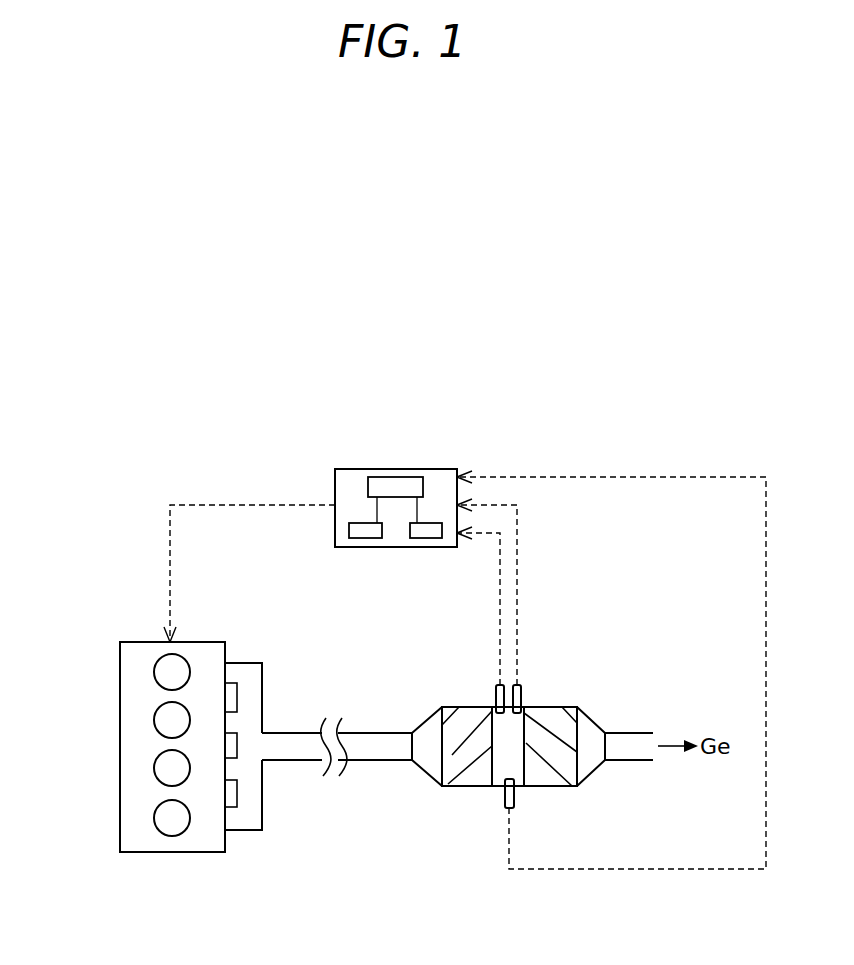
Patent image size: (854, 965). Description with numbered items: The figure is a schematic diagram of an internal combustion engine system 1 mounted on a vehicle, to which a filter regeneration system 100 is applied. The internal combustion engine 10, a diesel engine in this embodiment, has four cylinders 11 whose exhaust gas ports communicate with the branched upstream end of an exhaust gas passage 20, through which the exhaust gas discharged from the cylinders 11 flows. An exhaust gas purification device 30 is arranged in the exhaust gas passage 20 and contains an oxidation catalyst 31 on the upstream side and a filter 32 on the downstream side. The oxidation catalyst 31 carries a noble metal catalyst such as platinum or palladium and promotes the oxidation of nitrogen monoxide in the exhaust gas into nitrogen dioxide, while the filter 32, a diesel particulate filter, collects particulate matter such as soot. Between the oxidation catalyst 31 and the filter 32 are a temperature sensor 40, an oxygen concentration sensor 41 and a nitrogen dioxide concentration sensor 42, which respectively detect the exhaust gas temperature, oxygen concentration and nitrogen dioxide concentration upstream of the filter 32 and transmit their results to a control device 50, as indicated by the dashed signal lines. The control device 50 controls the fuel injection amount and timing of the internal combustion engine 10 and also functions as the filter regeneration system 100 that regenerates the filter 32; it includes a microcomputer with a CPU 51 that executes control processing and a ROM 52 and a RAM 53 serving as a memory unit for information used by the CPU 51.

The internal combustion engine system 1 is at (130, 300).
The internal combustion engine 10 is at (135, 642).
The cylinders 11 is at (154, 672).
The exhaust gas passage 20 is at (296, 731).
The exhaust gas purification device 30 is at (494, 803).
The oxidation catalyst 31 is at (468, 786).
The filter 32 is at (552, 786).
The temperature sensor 40 is at (504, 808).
The oxygen concentration sensor 41 is at (496, 698).
The nitrogen dioxide concentration sensor 42 is at (521, 698).
The control device 50 is at (311, 532).
The CPU 51 is at (397, 477).
The ROM 52 is at (366, 538).
The RAM 53 is at (425, 538).
The filter regeneration system 100 is at (455, 455).